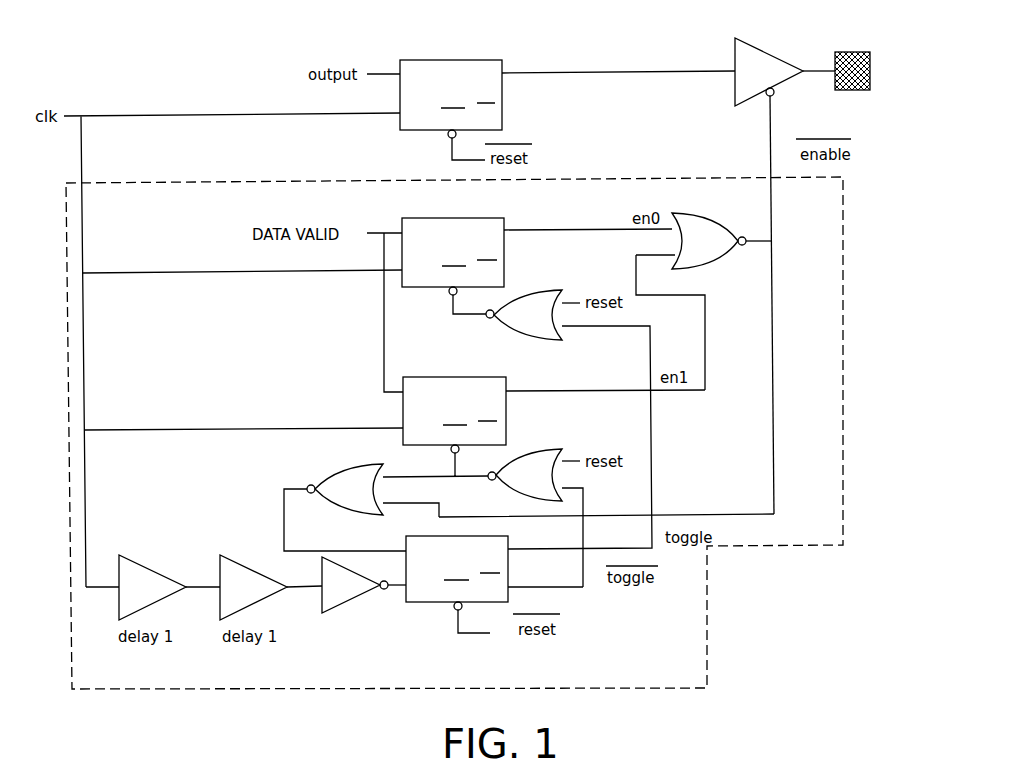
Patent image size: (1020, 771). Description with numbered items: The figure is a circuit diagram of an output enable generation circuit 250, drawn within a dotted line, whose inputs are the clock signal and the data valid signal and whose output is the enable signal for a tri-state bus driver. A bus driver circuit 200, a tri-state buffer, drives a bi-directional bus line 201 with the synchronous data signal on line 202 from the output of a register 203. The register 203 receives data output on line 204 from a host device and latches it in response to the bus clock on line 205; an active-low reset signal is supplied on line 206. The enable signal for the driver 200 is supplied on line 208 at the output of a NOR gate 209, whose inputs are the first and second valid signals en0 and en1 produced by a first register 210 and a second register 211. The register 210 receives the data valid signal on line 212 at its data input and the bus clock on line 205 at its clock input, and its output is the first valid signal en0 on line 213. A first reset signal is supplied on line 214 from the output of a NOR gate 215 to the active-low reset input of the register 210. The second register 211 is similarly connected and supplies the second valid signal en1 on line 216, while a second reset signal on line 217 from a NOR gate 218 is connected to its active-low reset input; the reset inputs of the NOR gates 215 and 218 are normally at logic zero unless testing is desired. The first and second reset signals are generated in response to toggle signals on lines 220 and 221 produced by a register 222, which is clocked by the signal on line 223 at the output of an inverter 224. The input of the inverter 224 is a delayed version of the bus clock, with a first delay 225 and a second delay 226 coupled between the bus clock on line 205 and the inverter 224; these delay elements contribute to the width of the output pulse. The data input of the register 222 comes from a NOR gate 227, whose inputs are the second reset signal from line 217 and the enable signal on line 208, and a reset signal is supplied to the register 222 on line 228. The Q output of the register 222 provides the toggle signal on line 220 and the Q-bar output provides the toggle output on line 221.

The bus driver circuit 200 is at (747, 42).
The bi-directional bus line 201 is at (850, 52).
The line 202 is at (587, 72).
The register 203 is at (469, 60).
The line 204 is at (386, 72).
The line 205 is at (297, 116).
The line 206 is at (463, 161).
The line 208 is at (770, 143).
The NOR gate 209 is at (681, 267).
The first register 210 is at (453, 217).
The second register 211 is at (446, 377).
The line 212 is at (372, 236).
The line 213 is at (580, 231).
The line 214 is at (455, 319).
The NOR gate 215 is at (550, 340).
The line 216 is at (577, 392).
The line 217 is at (453, 478).
The NOR gate 218 is at (552, 447).
The line 220 is at (653, 478).
The line 221 is at (586, 587).
The register 222 is at (437, 604).
The line 223 is at (400, 589).
The inverter 224 is at (323, 607).
The first delay 225 is at (153, 568).
The second delay 226 is at (256, 568).
The NOR gate 227 is at (332, 467).
The line 228 is at (490, 633).
The output enable generation circuit 250 is at (843, 488).